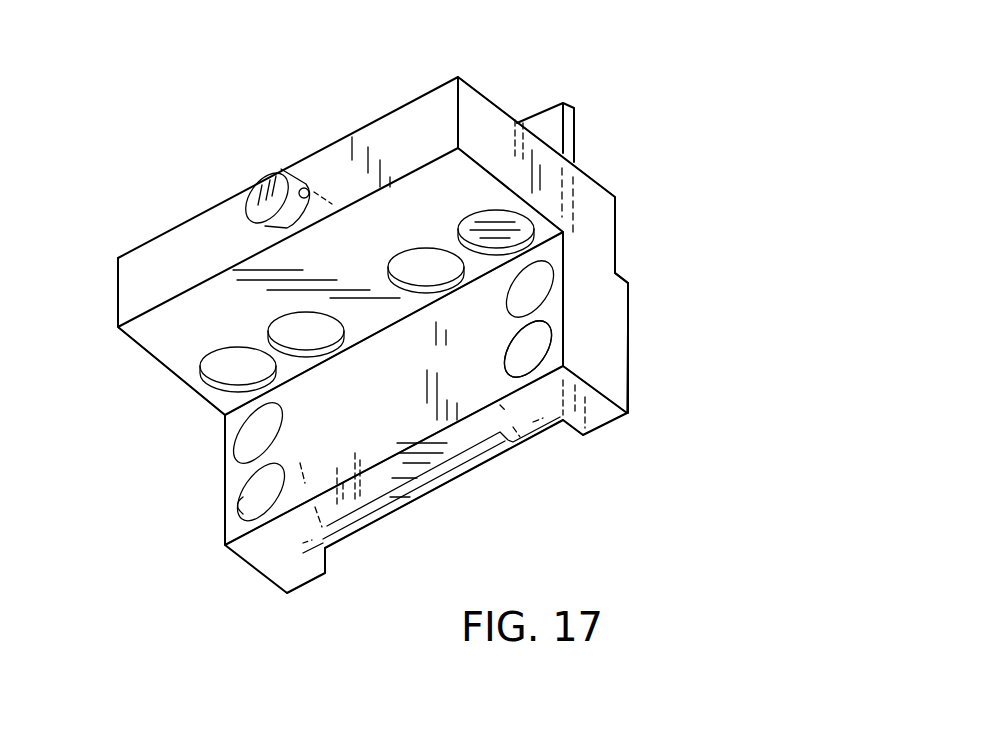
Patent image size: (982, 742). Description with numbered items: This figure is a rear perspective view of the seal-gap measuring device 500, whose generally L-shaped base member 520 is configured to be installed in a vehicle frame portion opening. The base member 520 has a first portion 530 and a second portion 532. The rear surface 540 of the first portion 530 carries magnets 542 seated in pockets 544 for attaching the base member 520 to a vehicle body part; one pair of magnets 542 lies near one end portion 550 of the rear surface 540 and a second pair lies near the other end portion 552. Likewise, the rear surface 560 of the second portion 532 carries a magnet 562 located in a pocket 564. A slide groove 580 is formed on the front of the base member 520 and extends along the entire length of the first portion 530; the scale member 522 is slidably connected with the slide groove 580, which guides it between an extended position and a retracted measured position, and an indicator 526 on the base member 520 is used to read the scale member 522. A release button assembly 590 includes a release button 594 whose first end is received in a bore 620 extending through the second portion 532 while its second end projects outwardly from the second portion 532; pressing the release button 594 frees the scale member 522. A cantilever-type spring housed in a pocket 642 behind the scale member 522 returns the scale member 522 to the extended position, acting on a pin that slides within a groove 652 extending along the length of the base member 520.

The device 500 is at (660, 110).
The base member 520 is at (627, 421).
The scale member 522 is at (581, 114).
The indicator 526 is at (633, 280).
The first portion 530 is at (612, 370).
The second portion 532 is at (482, 112).
The rear surface 540 is at (402, 412).
The magnet 542 is at (260, 483).
The pocket 544 is at (237, 508).
The end portion 550 is at (230, 478).
The end portion 552 is at (537, 341).
The rear surface 560 is at (225, 300).
The magnet 562 is at (227, 370).
The pocket 564 is at (495, 252).
The slide groove 580 is at (575, 438).
The release button assembly 590 is at (244, 173).
The release button 594 is at (280, 175).
The bore 620 is at (306, 188).
The pocket 642 is at (455, 449).
The groove 652 is at (335, 510).